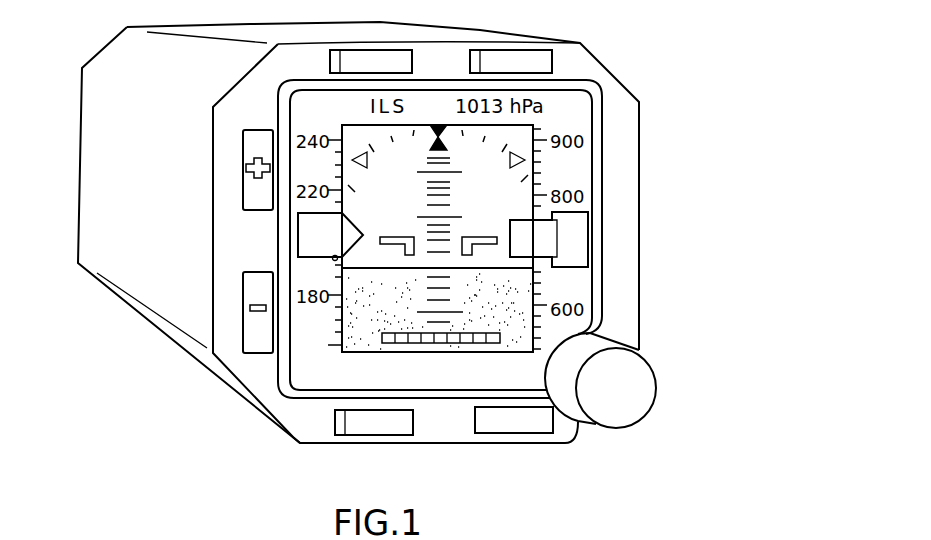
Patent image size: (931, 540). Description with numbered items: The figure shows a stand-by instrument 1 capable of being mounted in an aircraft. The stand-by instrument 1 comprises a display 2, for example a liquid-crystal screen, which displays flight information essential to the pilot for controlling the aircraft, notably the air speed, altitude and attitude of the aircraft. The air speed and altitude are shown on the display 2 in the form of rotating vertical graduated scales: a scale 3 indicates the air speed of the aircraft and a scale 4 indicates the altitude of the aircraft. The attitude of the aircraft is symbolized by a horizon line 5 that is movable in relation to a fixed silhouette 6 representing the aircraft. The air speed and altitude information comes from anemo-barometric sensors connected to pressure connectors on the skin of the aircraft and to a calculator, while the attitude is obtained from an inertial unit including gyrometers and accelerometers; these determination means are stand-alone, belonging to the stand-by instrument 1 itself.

The stand-by instrument 1 is at (645, 58).
The display 2 is at (308, 375).
The scale 3 is at (300, 232).
The scale 4 is at (586, 248).
The horizon line 5 is at (490, 268).
The fixed silhouette 6 is at (420, 268).